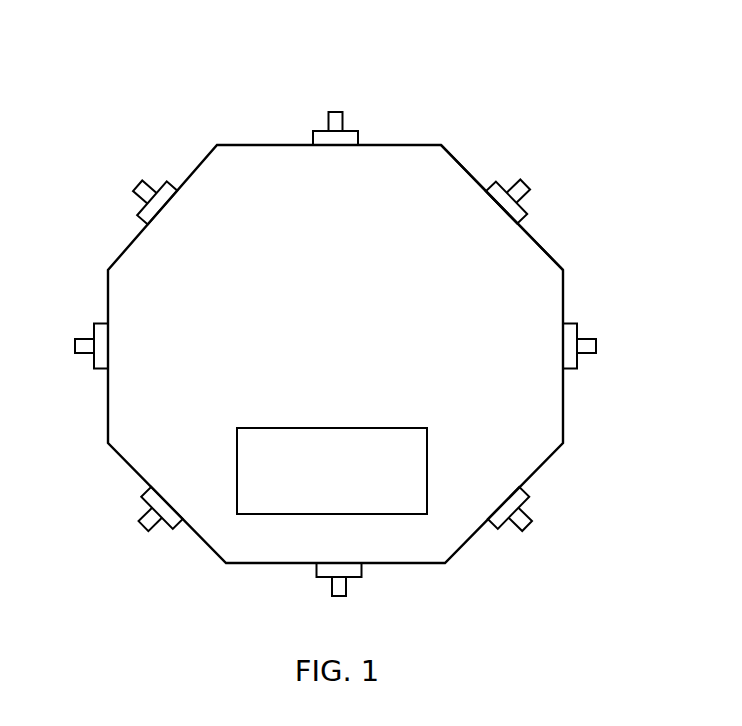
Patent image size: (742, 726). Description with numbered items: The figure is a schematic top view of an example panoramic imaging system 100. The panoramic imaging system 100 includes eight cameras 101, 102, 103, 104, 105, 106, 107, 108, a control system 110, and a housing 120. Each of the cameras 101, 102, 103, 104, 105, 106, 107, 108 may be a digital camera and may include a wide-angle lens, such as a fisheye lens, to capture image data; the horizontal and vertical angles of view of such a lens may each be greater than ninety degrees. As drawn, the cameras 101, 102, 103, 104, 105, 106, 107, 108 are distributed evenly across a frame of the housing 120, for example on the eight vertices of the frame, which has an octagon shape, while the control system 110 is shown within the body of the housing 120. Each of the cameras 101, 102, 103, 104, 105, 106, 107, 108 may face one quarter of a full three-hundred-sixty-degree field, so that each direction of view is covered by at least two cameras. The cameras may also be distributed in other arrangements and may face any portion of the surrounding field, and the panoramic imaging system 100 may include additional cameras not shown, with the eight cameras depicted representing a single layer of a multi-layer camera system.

The panoramic imaging system 100 is at (565, 119).
The camera 101 is at (335, 116).
The camera 102 is at (519, 191).
The camera 103 is at (600, 346).
The camera 104 is at (526, 516).
The camera 105 is at (339, 592).
The camera 106 is at (147, 517).
The camera 107 is at (71, 346).
The camera 108 is at (135, 197).
The control system 110 is at (332, 471).
The housing 120 is at (566, 270).